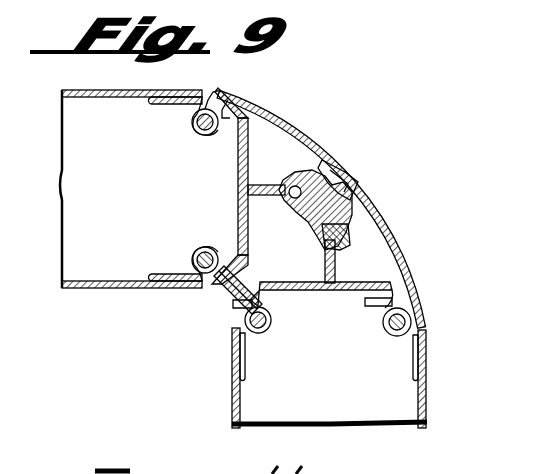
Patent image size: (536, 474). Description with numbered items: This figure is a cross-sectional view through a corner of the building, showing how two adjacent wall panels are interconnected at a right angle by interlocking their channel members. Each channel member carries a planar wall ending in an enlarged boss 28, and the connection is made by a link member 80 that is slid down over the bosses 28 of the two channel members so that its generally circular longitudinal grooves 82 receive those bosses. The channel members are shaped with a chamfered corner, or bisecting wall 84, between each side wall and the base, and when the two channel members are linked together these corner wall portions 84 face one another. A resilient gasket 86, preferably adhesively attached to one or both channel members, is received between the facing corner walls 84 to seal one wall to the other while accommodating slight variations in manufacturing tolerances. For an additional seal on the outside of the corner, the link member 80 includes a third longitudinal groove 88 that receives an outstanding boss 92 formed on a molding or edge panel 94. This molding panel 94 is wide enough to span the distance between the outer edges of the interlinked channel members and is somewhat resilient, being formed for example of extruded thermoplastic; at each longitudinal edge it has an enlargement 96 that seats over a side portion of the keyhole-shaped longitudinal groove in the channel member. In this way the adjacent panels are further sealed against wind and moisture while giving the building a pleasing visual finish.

The boss 28 is at (290, 183).
The link member 80 is at (357, 217).
The longitudinal grooves 82 is at (345, 242).
The bisecting wall 84 is at (250, 265).
The resilient gasket 86 is at (233, 292).
The third longitudinal groove 88 is at (337, 167).
The outstanding boss 92 is at (362, 197).
The molding panel 94 is at (420, 263).
The enlargement 96 is at (412, 324).